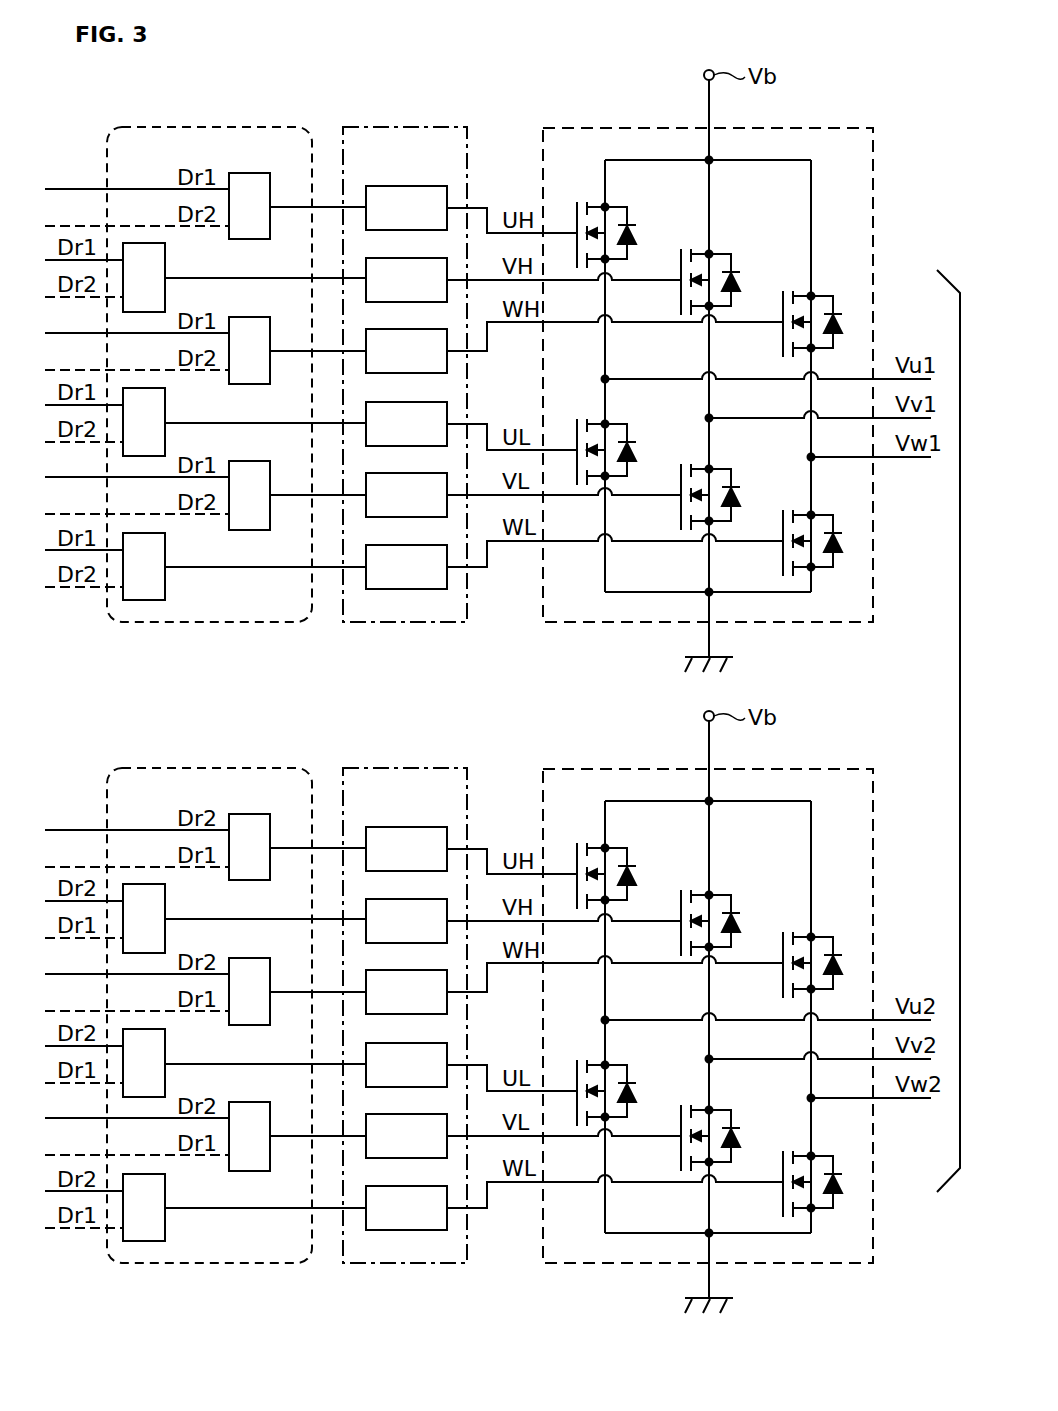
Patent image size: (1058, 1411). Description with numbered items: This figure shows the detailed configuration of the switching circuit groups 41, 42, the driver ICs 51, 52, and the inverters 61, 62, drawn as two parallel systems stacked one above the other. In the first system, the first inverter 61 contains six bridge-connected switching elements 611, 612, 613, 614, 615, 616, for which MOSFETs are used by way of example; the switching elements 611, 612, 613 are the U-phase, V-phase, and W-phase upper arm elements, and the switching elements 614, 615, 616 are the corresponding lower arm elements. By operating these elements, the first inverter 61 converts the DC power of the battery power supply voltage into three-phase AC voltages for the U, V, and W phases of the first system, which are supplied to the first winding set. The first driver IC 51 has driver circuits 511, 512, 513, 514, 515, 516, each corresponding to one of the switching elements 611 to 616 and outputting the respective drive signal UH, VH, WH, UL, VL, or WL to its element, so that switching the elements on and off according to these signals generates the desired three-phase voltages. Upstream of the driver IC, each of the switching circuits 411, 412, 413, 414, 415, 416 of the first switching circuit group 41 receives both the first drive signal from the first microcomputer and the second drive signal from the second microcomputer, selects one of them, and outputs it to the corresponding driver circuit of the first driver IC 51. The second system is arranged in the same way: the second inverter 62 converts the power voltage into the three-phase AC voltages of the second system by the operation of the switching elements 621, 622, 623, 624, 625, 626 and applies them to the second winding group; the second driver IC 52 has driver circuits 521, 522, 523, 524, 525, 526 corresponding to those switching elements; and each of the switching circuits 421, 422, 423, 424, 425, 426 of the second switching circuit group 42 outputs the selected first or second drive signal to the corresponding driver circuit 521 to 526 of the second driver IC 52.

The first switching circuit group 41 is at (214, 127).
The second switching circuit group 42 is at (209, 984).
The first driver IC 51 is at (405, 127).
The second driver IC 52 is at (405, 984).
The first inverter 61 is at (607, 128).
The second inverter 62 is at (708, 984).
The switching circuit 411 is at (247, 173).
The switching circuit 412 is at (166, 275).
The switching circuit 413 is at (247, 317).
The switching circuit 414 is at (166, 419).
The switching circuit 415 is at (247, 461).
The switching circuit 416 is at (166, 564).
The switching circuit 421 is at (269, 831).
The switching circuit 422 is at (181, 918).
The switching circuit 423 is at (269, 976).
The switching circuit 424 is at (181, 1063).
The switching circuit 425 is at (269, 1121).
The switching circuit 426 is at (181, 1207).
The driver circuit 511 is at (392, 186).
The driver circuit 512 is at (392, 258).
The driver circuit 513 is at (392, 329).
The driver circuit 514 is at (392, 402).
The driver circuit 515 is at (392, 473).
The driver circuit 516 is at (392, 545).
The driver circuit 521 is at (407, 836).
The driver circuit 522 is at (407, 908).
The driver circuit 523 is at (407, 979).
The driver circuit 524 is at (407, 1052).
The driver circuit 525 is at (407, 1123).
The driver circuit 526 is at (407, 1195).
The switching element 611 is at (631, 220).
The switching element 612 is at (735, 267).
The switching element 613 is at (821, 303).
The switching element 614 is at (631, 437).
The switching element 615 is at (735, 482).
The switching element 616 is at (821, 522).
The switching element 621 is at (631, 861).
The switching element 622 is at (735, 908).
The switching element 623 is at (821, 944).
The switching element 624 is at (631, 1078).
The switching element 625 is at (735, 1123).
The switching element 626 is at (821, 1163).